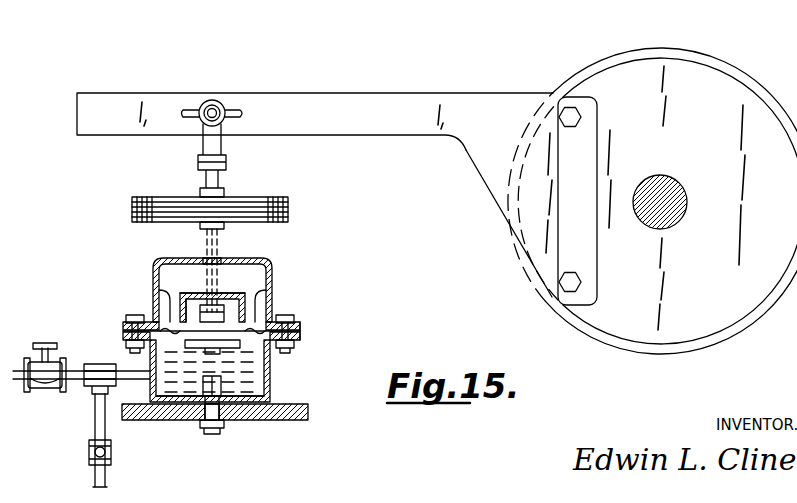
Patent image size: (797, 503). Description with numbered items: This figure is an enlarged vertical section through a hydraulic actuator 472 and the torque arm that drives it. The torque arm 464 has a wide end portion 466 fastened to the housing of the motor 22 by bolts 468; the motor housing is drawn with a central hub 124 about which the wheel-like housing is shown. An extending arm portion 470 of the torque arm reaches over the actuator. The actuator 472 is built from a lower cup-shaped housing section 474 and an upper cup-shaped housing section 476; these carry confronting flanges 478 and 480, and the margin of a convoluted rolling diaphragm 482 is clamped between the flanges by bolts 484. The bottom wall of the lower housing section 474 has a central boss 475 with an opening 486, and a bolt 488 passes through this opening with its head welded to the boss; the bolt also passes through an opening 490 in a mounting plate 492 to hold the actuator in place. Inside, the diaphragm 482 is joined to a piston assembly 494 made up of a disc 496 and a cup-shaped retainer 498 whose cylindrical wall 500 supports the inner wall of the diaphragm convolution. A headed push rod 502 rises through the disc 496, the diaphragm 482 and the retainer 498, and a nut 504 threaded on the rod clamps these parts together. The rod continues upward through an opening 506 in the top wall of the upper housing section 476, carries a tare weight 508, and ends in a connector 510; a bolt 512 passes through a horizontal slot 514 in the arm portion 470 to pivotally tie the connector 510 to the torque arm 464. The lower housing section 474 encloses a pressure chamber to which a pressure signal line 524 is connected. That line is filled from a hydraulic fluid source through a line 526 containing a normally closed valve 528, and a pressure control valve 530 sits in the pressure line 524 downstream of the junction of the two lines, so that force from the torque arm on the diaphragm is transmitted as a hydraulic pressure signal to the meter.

The motor 22 is at (713, 58).
The hub 124 is at (661, 186).
The torque arm 464 is at (393, 93).
The wide end portion 466 is at (582, 148).
The bolts 468 is at (582, 116).
The arm portion 470 is at (130, 105).
The hydraulic actuator 472 is at (150, 258).
The lower housing section 474 is at (273, 290).
The boss 475 is at (181, 398).
The upper housing section 476 is at (271, 382).
The flange 478 is at (300, 326).
The flange 480 is at (296, 342).
The convoluted rolling diaphragm 482 is at (300, 335).
The bolts 484 is at (134, 316).
The opening 486 is at (218, 416).
The bolt 488 is at (214, 378).
The opening 490 is at (205, 421).
The mounting plate 492 is at (292, 421).
The piston assembly 494 is at (227, 282).
The disc 496 is at (210, 369).
The cup-shaped retainer 498 is at (197, 300).
The cylindrical wall 500 is at (180, 296).
The push rod 502 is at (222, 245).
The nut 504 is at (222, 308).
The opening 506 is at (205, 262).
The tare weight 508 is at (253, 200).
The connector 510 is at (222, 148).
The bolt 512 is at (203, 104).
The horizontal slot 514 is at (244, 113).
The pressure signal line 524 is at (112, 366).
The line 526 is at (106, 480).
The normally closed valve 528 is at (90, 451).
The pressure control valve 530 is at (45, 343).